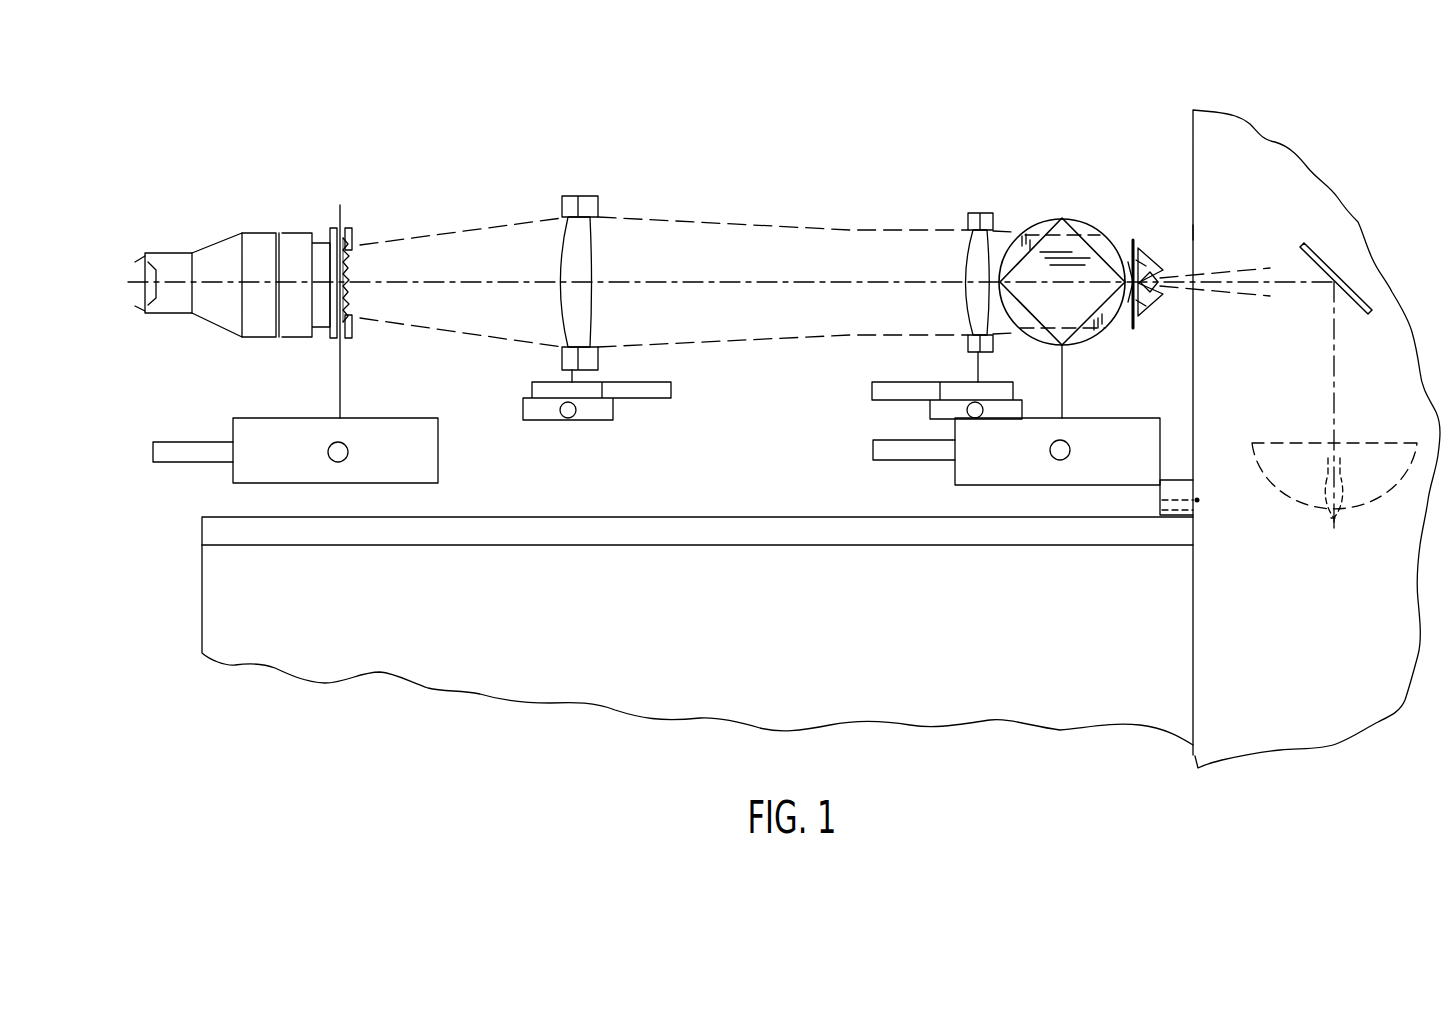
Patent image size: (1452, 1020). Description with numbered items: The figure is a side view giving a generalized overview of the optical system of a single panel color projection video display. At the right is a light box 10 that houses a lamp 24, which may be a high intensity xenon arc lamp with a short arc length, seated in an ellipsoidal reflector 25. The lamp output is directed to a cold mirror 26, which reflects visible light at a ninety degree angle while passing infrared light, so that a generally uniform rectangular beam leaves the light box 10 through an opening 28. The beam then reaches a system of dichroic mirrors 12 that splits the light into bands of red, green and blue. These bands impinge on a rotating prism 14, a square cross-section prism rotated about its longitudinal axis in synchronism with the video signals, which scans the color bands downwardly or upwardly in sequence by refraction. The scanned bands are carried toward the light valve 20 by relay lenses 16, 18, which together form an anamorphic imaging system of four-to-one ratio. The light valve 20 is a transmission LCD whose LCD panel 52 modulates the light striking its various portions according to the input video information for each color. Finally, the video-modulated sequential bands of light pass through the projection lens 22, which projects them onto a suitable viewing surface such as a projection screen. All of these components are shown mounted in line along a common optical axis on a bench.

The light box 10 is at (1193, 113).
The dichroic mirrors 12 is at (1129, 224).
The rotating prism 14 is at (1059, 200).
The relay lens 16 is at (976, 200).
The relay lens 18 is at (568, 194).
The light valve 20 is at (340, 205).
The projection lens 22 is at (208, 247).
The lamp 24 is at (1262, 478).
The ellipsoidal reflector 25 is at (1372, 505).
The cold mirror 26 is at (1327, 263).
The opening 28 is at (1193, 230).
The LCD panel 52 is at (353, 262).